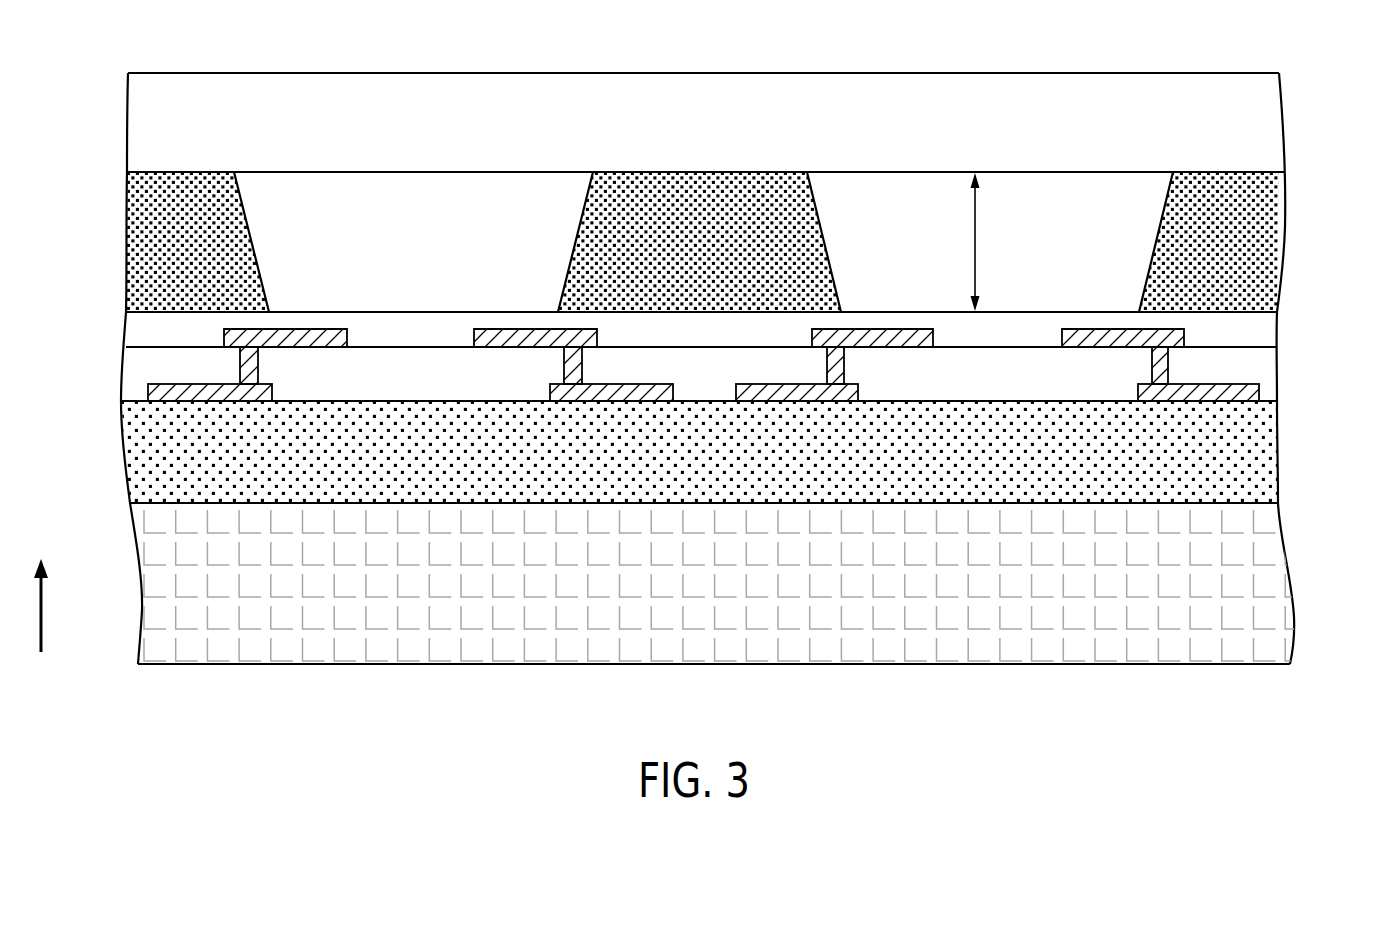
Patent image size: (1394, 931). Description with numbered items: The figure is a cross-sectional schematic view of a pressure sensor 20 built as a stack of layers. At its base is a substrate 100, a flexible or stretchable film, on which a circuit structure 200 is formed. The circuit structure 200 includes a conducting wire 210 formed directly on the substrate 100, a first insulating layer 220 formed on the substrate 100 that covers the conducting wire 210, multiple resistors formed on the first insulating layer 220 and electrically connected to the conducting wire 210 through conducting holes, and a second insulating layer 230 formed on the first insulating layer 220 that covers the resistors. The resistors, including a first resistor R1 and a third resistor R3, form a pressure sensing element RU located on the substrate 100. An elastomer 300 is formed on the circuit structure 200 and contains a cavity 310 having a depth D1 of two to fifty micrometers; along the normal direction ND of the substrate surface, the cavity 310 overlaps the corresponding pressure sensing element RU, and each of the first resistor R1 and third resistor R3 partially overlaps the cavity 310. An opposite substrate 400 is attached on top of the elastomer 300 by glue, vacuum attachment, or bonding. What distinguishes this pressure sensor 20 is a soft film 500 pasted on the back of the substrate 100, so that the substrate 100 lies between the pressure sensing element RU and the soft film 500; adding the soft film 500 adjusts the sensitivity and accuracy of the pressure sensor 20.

The pressure sensor 20 is at (745, 395).
The substrate 100 is at (1262, 452).
The circuit structure 200 is at (733, 465).
The conducting wire 210 is at (627, 392).
The first insulating layer 220 is at (443, 377).
The second insulating layer 230 is at (378, 333).
The elastomer 300 is at (1267, 235).
The cavity 310 is at (1068, 208).
The opposite substrate 400 is at (1267, 120).
The soft film 500 is at (1278, 585).
The first resistor R1 is at (895, 338).
The third resistor R3 is at (1087, 338).
The pressure sensing element RU is at (998, 473).
The depth D1 is at (975, 242).
The normal direction ND is at (61, 605).